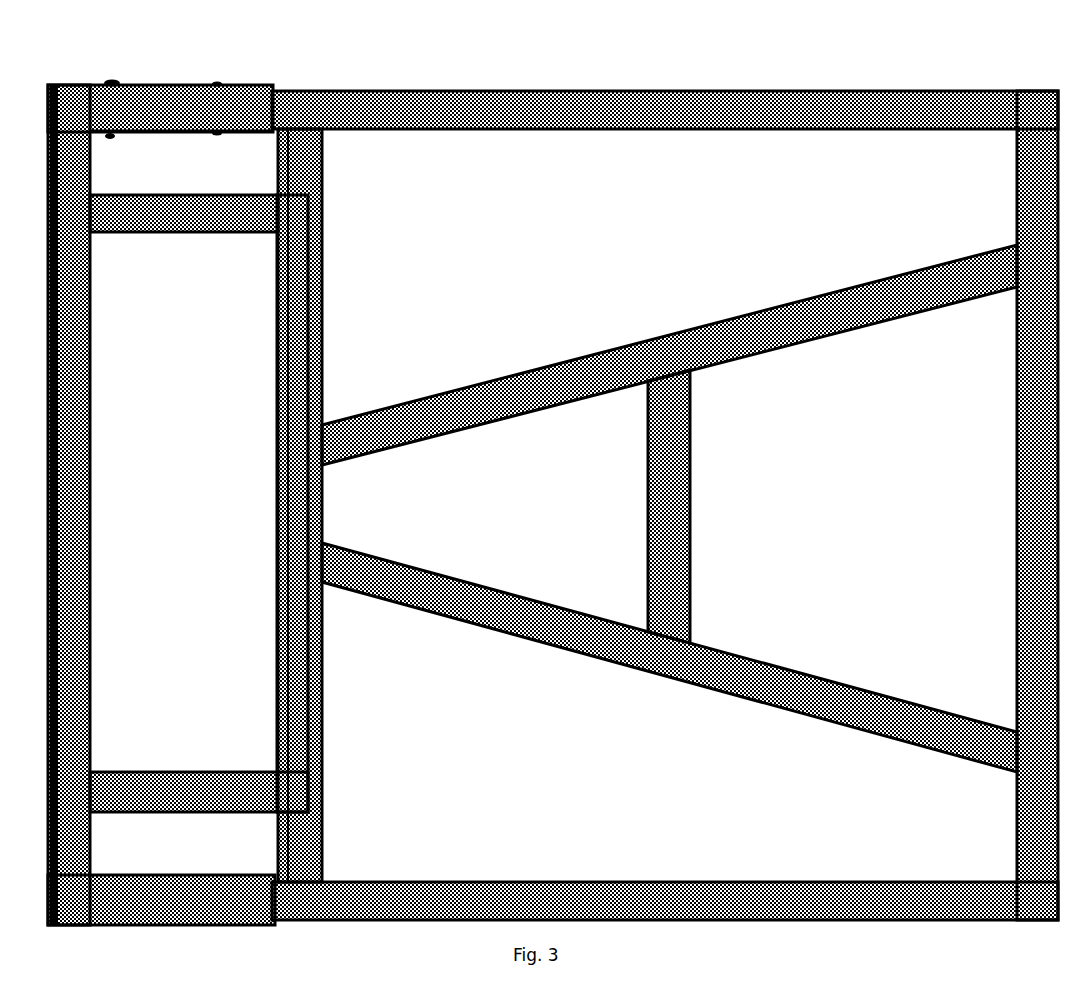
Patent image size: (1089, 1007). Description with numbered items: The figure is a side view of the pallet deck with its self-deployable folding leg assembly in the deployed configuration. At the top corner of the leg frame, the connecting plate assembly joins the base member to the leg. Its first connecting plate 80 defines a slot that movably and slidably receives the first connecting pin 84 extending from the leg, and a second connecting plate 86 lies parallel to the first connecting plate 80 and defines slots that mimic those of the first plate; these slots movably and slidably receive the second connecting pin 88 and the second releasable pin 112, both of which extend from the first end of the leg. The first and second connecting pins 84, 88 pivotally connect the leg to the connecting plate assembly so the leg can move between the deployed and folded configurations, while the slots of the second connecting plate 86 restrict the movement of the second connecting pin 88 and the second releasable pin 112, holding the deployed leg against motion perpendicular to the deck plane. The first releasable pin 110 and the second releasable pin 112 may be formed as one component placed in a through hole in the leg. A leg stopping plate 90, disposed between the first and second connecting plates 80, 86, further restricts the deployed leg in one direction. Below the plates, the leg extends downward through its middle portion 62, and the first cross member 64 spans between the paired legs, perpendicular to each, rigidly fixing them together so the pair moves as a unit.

The middle portion 62 is at (290, 452).
The first cross member 64 is at (323, 169).
The first connecting plate 80 is at (163, 94).
The first connecting pin 84 is at (112, 80).
The second connecting plate 86 is at (153, 131).
The second connecting pin 88 is at (110, 139).
The leg stopping plate 90 is at (242, 115).
The first releasable pin 110 is at (217, 82).
The second releasable pin 112 is at (217, 135).